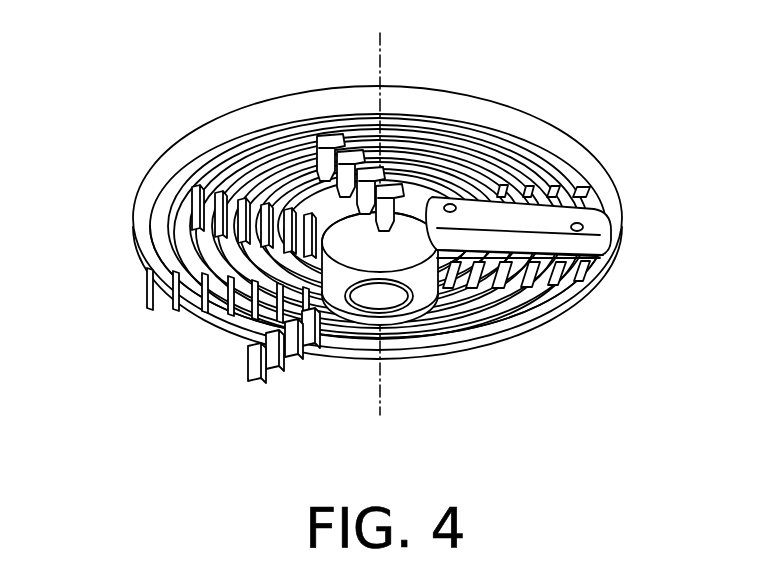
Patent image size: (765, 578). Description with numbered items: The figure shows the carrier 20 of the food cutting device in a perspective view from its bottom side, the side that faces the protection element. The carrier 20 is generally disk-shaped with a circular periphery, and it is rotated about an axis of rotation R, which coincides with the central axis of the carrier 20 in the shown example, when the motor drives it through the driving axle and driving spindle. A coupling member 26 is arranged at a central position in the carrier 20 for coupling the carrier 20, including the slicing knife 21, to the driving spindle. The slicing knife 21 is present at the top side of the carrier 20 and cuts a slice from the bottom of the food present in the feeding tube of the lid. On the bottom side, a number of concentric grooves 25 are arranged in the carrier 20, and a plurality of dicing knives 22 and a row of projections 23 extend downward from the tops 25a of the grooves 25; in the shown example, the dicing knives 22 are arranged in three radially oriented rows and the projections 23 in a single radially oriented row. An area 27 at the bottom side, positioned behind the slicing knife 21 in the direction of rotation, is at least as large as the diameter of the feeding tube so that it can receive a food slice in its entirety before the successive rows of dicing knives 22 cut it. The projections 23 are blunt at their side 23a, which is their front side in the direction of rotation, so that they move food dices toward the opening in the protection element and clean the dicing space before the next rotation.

The carrier 20 is at (133, 210).
The slicing knife 21 is at (547, 221).
The dicing knives 22 is at (262, 383).
The projections 23 is at (327, 130).
The side 23a is at (312, 142).
The concentric grooves 25 is at (487, 323).
The tops of the grooves 25a is at (417, 347).
The coupling member 26 is at (355, 318).
The area 27 is at (547, 288).
The axis of rotation R is at (386, 43).